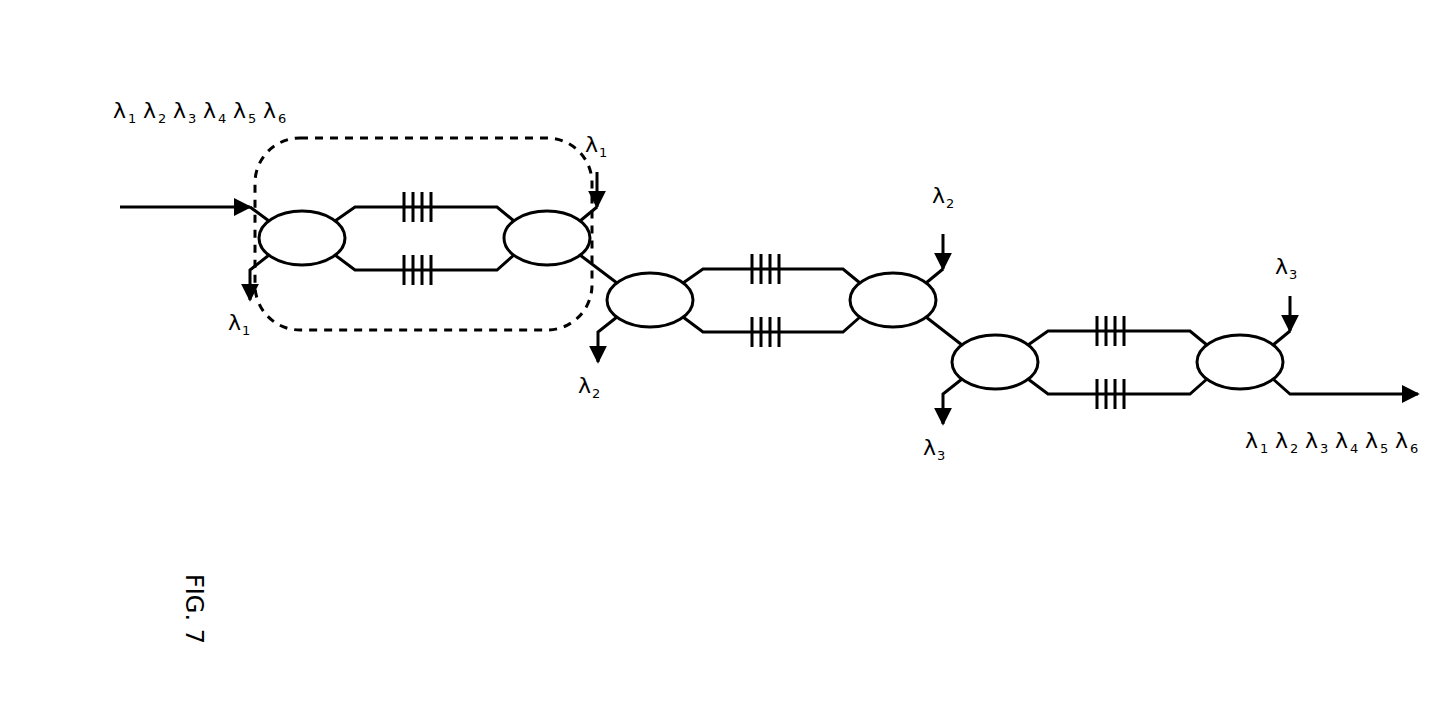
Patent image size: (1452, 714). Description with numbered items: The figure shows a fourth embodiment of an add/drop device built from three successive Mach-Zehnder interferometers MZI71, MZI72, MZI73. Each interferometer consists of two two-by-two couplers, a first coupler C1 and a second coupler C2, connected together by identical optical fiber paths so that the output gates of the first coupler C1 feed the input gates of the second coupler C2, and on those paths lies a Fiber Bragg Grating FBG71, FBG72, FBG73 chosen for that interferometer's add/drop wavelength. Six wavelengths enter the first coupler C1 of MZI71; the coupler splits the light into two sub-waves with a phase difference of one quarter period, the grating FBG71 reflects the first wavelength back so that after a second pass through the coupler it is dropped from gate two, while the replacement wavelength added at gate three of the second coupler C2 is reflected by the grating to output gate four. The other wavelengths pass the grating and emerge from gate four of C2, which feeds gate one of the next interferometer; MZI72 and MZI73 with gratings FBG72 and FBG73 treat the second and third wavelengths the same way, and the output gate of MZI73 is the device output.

The Mach-Zehnder interferometer MZI71 is at (378, 120).
The second interferometer MZI72 is at (838, 225).
The third interferometer MZI73 is at (1190, 298).
The Fiber Bragg Grating FBG71 is at (418, 238).
The Fiber Bragg Grating FBG72 is at (766, 300).
The Fiber Bragg Grating FBG73 is at (1111, 362).
The first coupler C1 is at (648, 300).
The second coupler C2 is at (893, 300).